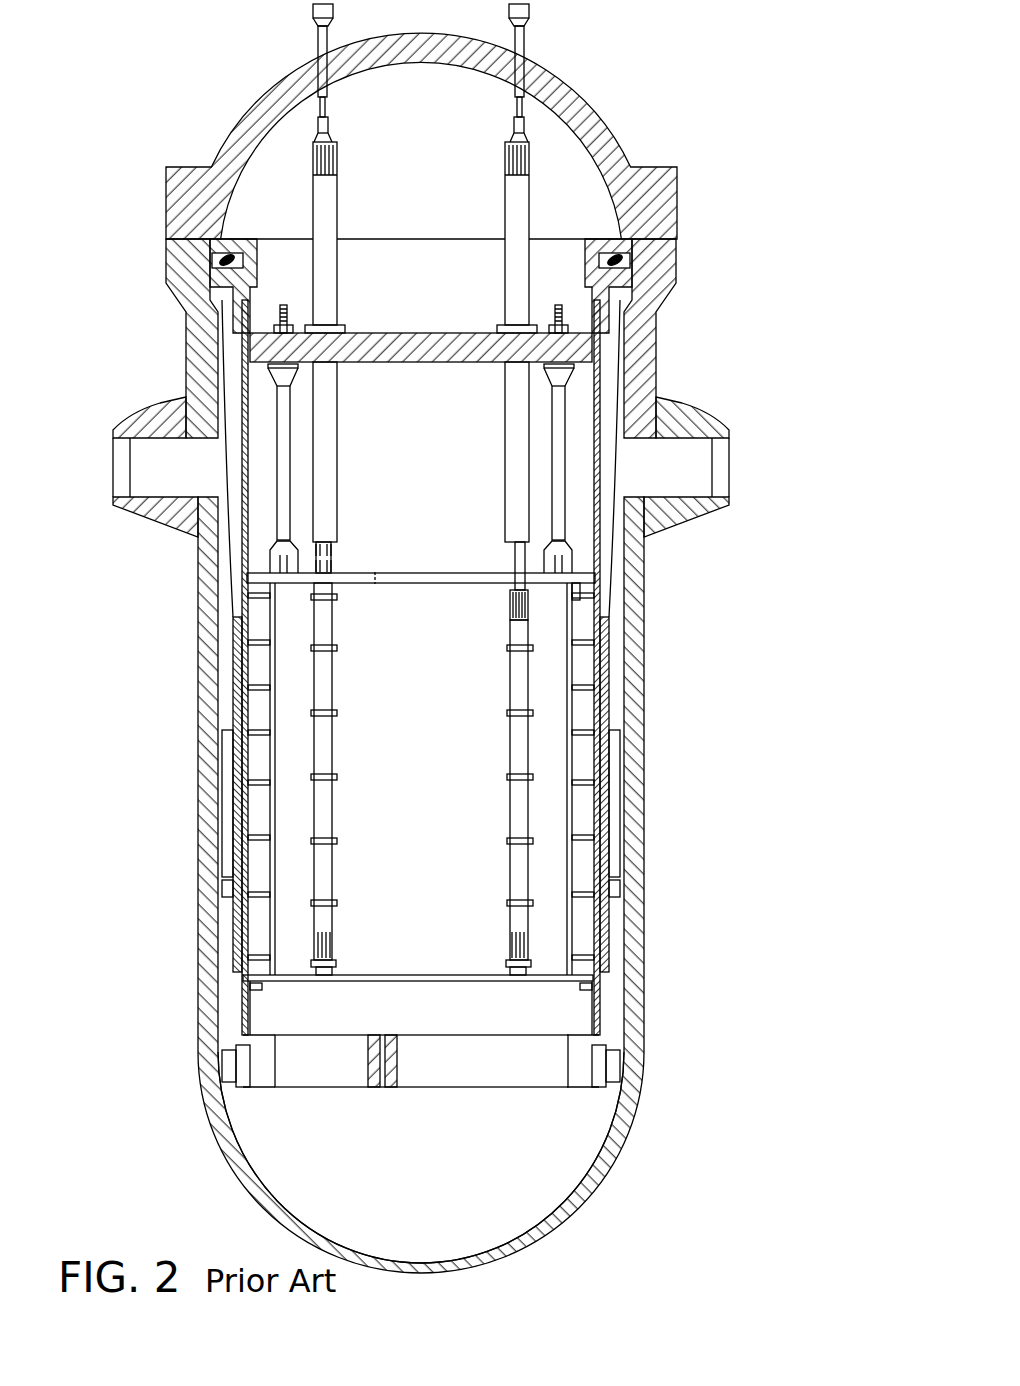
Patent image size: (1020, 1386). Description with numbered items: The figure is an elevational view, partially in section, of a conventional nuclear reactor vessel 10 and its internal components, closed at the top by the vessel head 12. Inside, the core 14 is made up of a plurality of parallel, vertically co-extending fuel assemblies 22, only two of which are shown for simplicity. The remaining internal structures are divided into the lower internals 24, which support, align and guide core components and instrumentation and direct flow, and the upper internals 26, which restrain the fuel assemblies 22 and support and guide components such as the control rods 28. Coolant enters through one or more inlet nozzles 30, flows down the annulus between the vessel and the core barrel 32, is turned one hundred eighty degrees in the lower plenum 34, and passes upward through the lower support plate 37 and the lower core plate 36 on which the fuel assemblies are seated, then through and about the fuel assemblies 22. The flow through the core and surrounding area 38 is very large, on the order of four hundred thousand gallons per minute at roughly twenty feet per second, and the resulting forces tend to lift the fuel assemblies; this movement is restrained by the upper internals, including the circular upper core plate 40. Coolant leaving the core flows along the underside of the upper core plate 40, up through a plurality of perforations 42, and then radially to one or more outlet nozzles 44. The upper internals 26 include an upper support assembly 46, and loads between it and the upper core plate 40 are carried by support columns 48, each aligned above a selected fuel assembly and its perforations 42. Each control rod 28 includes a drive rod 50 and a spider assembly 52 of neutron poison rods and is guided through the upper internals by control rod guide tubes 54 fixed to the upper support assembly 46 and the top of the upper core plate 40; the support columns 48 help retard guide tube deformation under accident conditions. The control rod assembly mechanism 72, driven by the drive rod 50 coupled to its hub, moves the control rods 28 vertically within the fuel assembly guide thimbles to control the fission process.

The reactor vessel 10 is at (645, 650).
The closure head 12 is at (677, 207).
The core 14 is at (444, 770).
The fuel assembly 22 is at (338, 683).
The lower internals 24 is at (442, 1020).
The upper internals 26 is at (444, 440).
The control rod 28 is at (510, 610).
The inlet nozzle 30 is at (147, 405).
The core barrel 32 is at (247, 573).
The lower plenum 34 is at (588, 1138).
The lower core plate 36 is at (482, 975).
The lower support plate 37 is at (465, 1072).
The surrounding area 38 is at (473, 748).
The upper core plate 40 is at (458, 583).
The perforations 42 is at (378, 572).
The outlet nozzle 44 is at (660, 412).
The upper support assembly 46 is at (598, 240).
The support column 48 is at (290, 465).
The drive rod 50 is at (515, 545).
The spider assembly 52 is at (512, 575).
The control rod guide tube 54 is at (333, 408).
The control rod assembly mechanism 72 is at (575, 598).